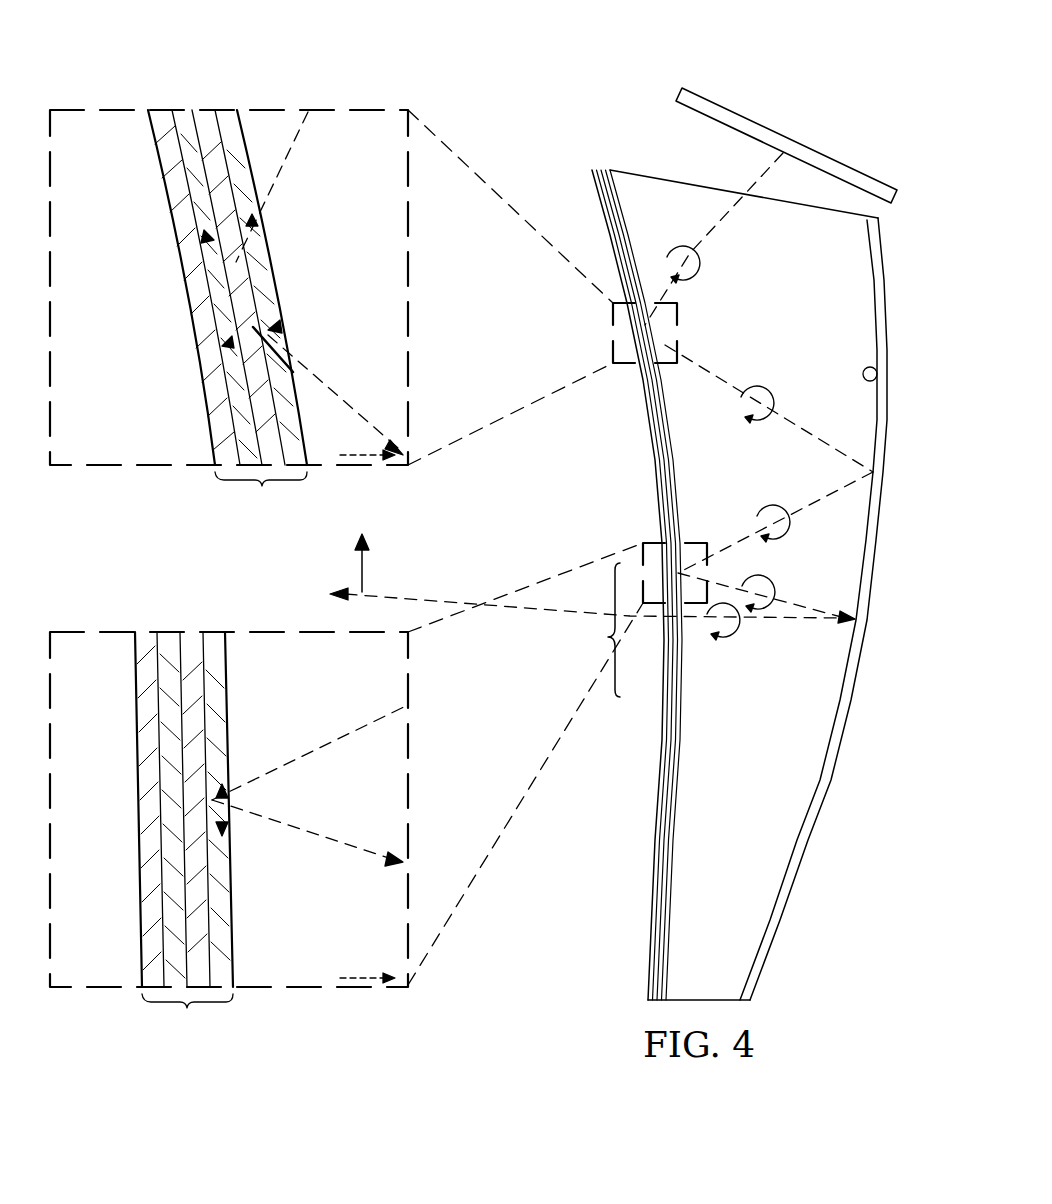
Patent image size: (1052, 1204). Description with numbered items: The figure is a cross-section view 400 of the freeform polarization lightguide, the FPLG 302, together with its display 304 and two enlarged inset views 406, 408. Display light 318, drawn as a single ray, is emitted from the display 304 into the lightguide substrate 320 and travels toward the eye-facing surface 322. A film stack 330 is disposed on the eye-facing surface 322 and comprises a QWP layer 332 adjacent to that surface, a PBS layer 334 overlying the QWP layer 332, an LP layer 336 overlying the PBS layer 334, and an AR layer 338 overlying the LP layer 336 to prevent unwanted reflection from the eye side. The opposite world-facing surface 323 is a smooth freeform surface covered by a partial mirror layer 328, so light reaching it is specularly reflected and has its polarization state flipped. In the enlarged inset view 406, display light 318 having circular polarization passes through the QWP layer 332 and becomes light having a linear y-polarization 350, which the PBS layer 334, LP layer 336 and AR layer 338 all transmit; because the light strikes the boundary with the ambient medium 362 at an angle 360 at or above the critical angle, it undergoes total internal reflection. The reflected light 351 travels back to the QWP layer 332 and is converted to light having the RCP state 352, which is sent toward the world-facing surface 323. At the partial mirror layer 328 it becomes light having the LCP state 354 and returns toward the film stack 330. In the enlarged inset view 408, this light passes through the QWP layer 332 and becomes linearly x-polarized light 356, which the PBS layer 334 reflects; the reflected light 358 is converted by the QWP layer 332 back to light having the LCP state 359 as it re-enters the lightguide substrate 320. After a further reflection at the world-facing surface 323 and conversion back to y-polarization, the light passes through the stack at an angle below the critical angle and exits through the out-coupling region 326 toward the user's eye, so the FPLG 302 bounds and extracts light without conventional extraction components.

The cross-section view 400 is at (785, 66).
The FPLG 302 is at (558, 148).
The display 304 is at (843, 167).
The display light 318 is at (700, 378).
The lightguide substrate 320 is at (766, 821).
The eye-facing surface 322 is at (690, 672).
The world-facing surface 323 is at (877, 373).
The out-coupling region 326 is at (590, 630).
The partial mirror layer 328 is at (880, 540).
The film stack 330 is at (648, 884).
The QWP layer 332 is at (226, 110).
The PBS layer 334 is at (204, 110).
The LP layer 336 is at (182, 110).
The AR layer 338 is at (155, 110).
The linear y-polarization light 350 is at (262, 228).
The reflected light 351 is at (276, 325).
The RCP state light 352 is at (322, 377).
The LCP state light 354 is at (355, 734).
The linearly x-polarized light 356 is at (224, 790).
The reflected light 358 is at (226, 833).
The LCP state light 359 is at (358, 862).
The angle 360 is at (200, 238).
The ambient medium 362 is at (141, 333).
The enlarged inset view 406 is at (78, 80).
The enlarged inset view 408 is at (78, 602).